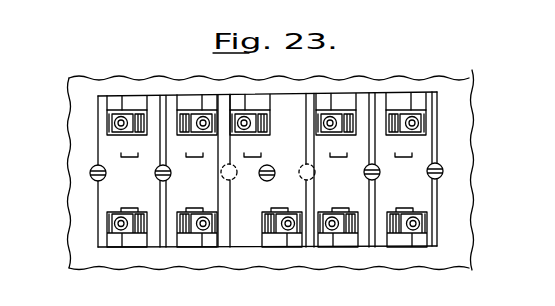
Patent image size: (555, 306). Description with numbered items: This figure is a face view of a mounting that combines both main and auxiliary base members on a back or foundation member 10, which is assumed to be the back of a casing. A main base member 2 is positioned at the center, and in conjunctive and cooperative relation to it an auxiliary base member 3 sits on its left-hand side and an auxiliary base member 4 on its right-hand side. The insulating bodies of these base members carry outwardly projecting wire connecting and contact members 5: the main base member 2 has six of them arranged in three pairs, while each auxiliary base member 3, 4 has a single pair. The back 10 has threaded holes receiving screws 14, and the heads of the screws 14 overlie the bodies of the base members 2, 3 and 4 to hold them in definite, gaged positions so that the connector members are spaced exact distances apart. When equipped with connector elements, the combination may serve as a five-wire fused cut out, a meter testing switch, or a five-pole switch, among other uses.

The main base member 2 is at (250, 241).
The auxiliary base member 3 is at (108, 150).
The auxiliary base member 4 is at (428, 140).
The wire connecting and contact member 5 is at (354, 113).
The back or foundation member 10 is at (453, 78).
The screw 14 is at (91, 180).